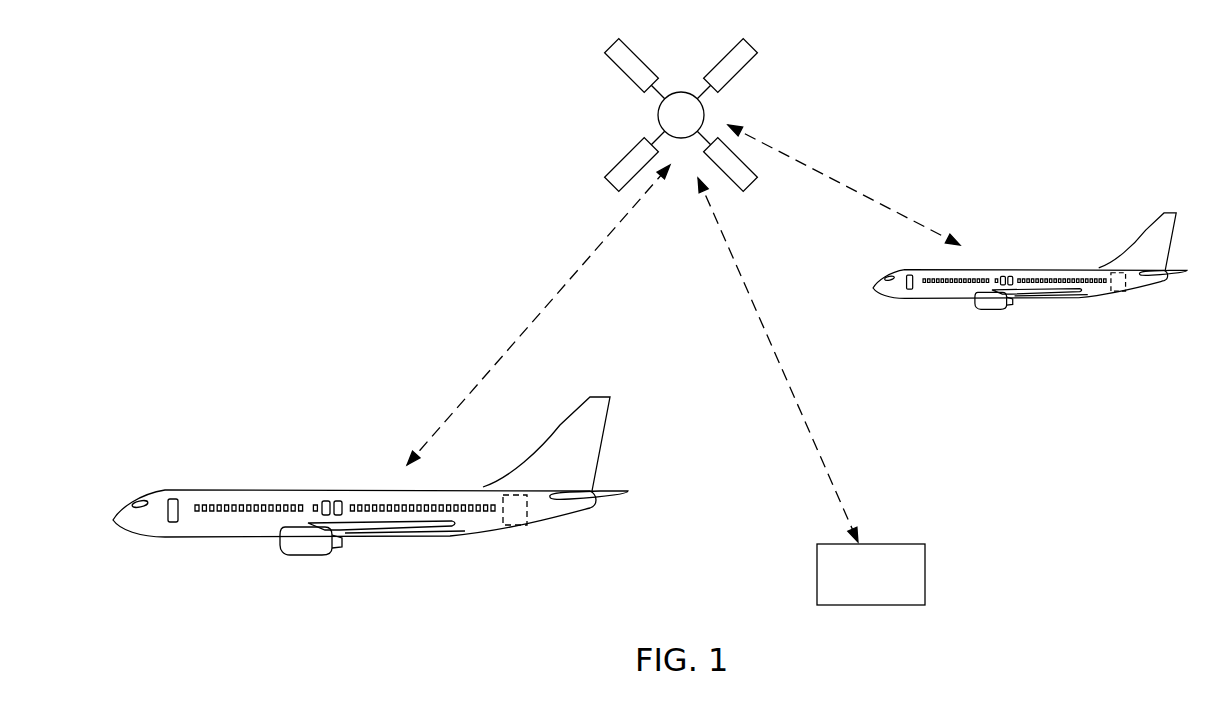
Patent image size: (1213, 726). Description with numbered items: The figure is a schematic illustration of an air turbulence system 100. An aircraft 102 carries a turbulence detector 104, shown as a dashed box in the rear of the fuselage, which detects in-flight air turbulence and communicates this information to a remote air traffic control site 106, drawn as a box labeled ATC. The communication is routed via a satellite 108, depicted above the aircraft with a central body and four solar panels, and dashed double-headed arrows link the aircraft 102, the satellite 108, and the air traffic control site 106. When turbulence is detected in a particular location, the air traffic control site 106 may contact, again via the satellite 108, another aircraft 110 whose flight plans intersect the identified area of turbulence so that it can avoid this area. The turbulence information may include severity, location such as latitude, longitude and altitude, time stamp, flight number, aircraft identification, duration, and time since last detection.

The air turbulence system 100 is at (368, 201).
The aircraft 102 is at (370, 491).
The turbulence detector 104 is at (516, 525).
The air traffic control site 106 is at (925, 578).
The satellite 108 is at (658, 117).
The another aircraft 110 is at (1043, 267).